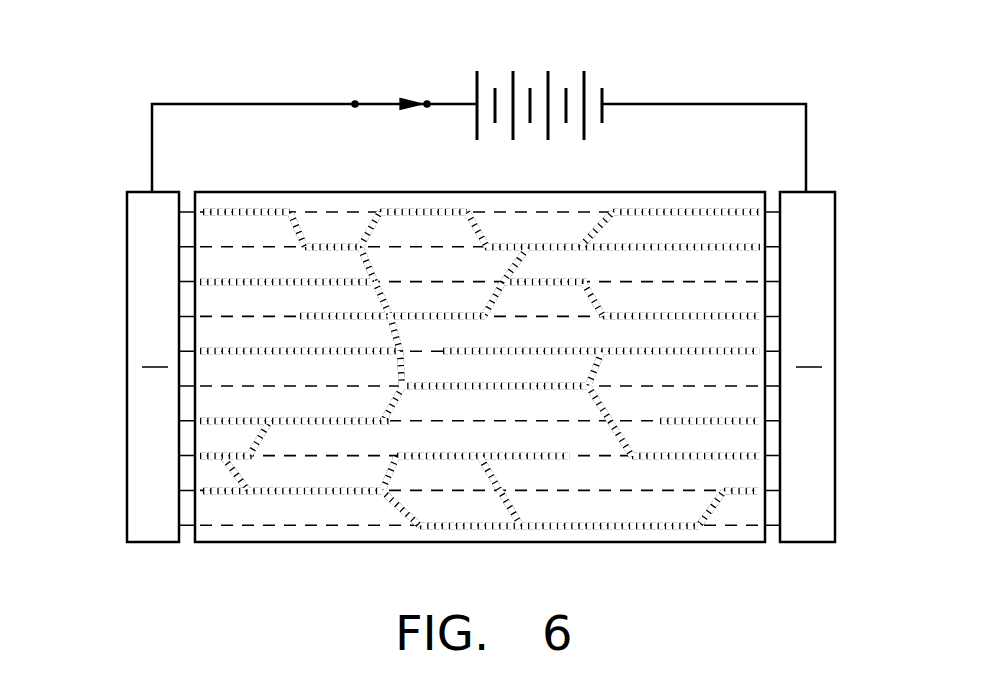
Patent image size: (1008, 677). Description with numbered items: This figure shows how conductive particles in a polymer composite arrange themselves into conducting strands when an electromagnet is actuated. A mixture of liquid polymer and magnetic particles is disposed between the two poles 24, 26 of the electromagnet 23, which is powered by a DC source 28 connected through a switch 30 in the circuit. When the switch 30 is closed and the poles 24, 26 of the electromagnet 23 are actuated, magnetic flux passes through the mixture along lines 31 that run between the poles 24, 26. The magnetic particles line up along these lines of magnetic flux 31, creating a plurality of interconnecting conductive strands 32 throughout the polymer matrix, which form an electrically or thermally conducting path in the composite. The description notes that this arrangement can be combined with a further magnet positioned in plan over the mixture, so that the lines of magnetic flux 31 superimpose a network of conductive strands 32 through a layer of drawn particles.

The electromagnet 23 is at (190, 88).
The pole 24 is at (152, 300).
The pole 26 is at (805, 270).
The DC source 28 is at (585, 80).
The switch 30 is at (379, 104).
The lines of magnetic flux 31 is at (347, 525).
The conductive strands 32 is at (552, 527).